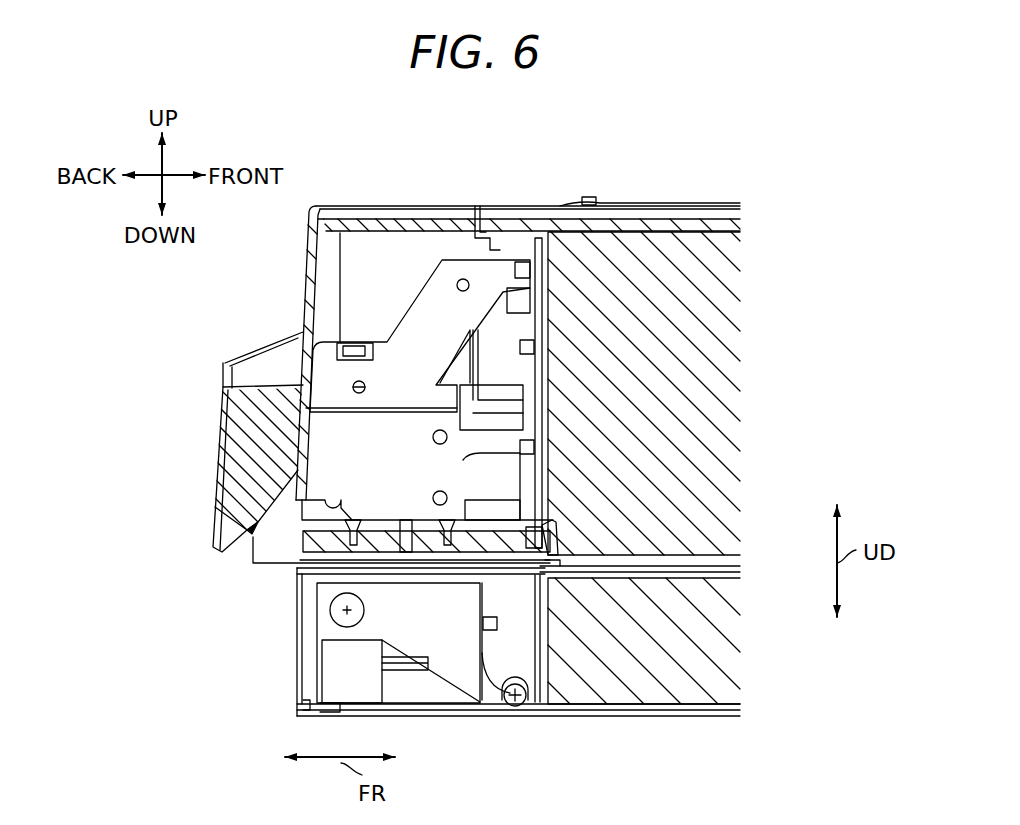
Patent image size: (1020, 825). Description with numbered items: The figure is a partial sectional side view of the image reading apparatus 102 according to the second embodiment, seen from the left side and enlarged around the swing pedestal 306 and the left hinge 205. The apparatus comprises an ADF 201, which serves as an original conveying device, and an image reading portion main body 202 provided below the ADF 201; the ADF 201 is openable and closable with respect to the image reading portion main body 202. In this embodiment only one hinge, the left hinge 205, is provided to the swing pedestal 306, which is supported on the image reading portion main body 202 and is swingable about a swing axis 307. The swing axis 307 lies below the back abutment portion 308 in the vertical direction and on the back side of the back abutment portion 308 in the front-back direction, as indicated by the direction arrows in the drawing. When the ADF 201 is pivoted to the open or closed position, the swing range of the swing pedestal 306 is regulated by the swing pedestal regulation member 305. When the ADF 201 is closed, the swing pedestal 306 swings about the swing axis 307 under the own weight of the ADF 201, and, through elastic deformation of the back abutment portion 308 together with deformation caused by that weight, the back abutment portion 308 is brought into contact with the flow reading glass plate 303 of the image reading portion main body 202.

The image reading apparatus 102 is at (425, 188).
The ADF 201 is at (706, 198).
The image reading portion main body 202 is at (702, 722).
The left hinge 205 is at (263, 545).
The flow reading glass plate 303 is at (740, 570).
The swing pedestal regulation member 305 is at (338, 610).
The swing pedestal 306 is at (325, 633).
The swing axis 307 is at (518, 708).
The back abutment portion 308 is at (558, 525).